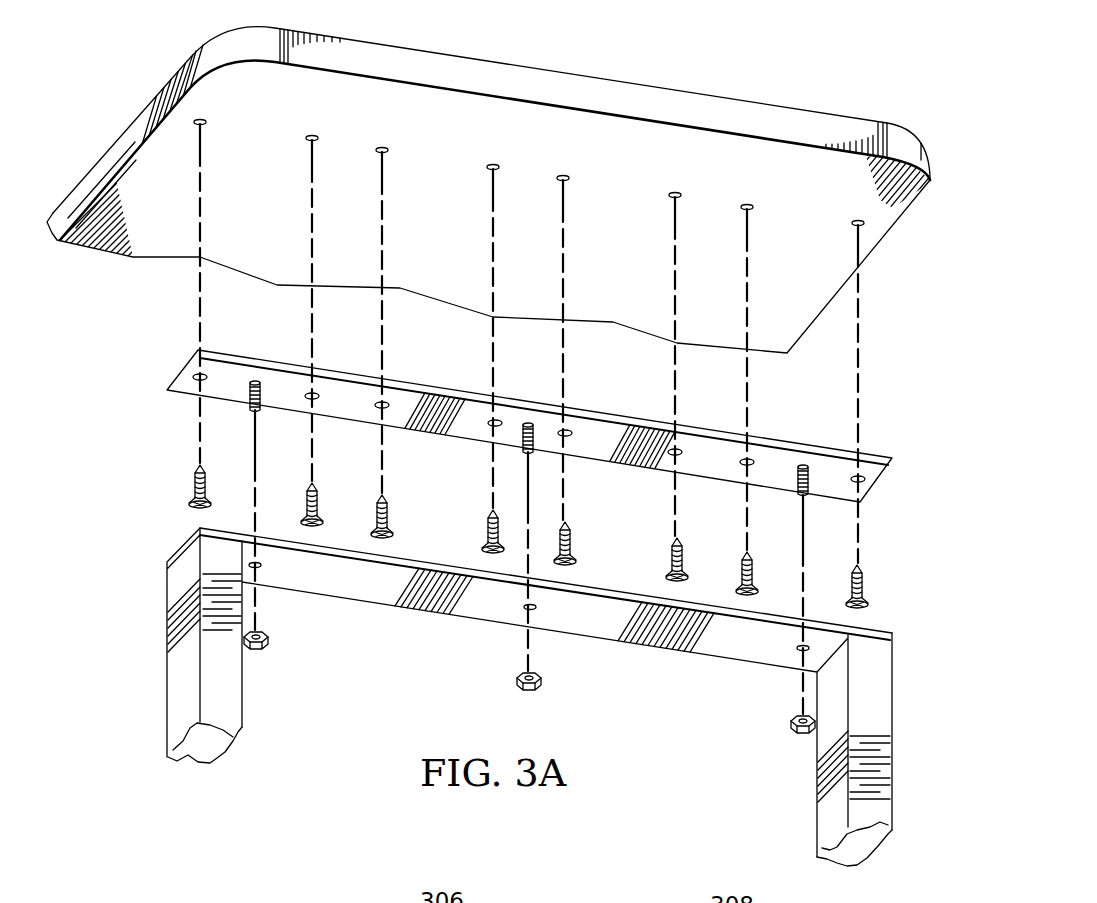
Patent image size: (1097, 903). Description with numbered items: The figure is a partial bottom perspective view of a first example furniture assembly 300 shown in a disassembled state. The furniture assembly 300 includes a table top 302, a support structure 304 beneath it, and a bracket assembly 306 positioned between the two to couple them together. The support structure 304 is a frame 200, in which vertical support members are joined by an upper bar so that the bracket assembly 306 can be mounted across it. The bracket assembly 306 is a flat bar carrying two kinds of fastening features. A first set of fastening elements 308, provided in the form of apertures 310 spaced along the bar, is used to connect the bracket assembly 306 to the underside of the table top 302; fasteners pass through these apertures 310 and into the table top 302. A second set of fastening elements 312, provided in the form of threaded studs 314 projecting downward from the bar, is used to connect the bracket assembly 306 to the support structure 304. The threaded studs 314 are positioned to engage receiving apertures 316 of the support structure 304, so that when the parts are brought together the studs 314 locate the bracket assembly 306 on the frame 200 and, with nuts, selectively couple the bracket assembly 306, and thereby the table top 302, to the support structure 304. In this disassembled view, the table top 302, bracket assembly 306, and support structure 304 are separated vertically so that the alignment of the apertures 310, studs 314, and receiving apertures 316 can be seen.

The frame 200 is at (123, 538).
The first example furniture assembly 300 is at (823, 70).
The table top 302 is at (650, 97).
The support structure 304 is at (167, 692).
The bracket assembly 306 is at (180, 365).
The first set of fastening elements 308 is at (531, 364).
The apertures 310 is at (340, 403).
The second set of fastening elements 312 is at (531, 513).
The threaded studs 314 is at (250, 387).
The receiving apertures 316 is at (258, 566).